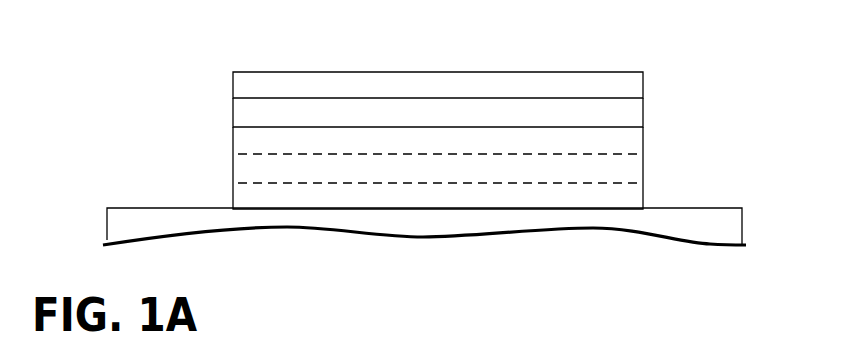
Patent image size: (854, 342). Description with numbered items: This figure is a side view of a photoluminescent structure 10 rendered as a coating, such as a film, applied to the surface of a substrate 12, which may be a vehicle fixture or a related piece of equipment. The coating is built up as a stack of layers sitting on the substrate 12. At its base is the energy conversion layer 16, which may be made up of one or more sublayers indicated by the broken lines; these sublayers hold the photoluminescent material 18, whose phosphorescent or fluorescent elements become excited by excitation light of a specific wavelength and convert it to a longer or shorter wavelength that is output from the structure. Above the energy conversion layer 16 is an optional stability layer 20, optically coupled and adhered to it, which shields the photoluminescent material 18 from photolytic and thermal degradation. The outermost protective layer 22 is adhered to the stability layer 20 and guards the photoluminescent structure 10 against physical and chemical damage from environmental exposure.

The photoluminescent structure 10 is at (580, 48).
The substrate 12 is at (686, 208).
The energy conversion layer 16 is at (233, 163).
The photoluminescent material 18 is at (597, 170).
The stability layer 20 is at (233, 112).
The protective layer 22 is at (327, 71).